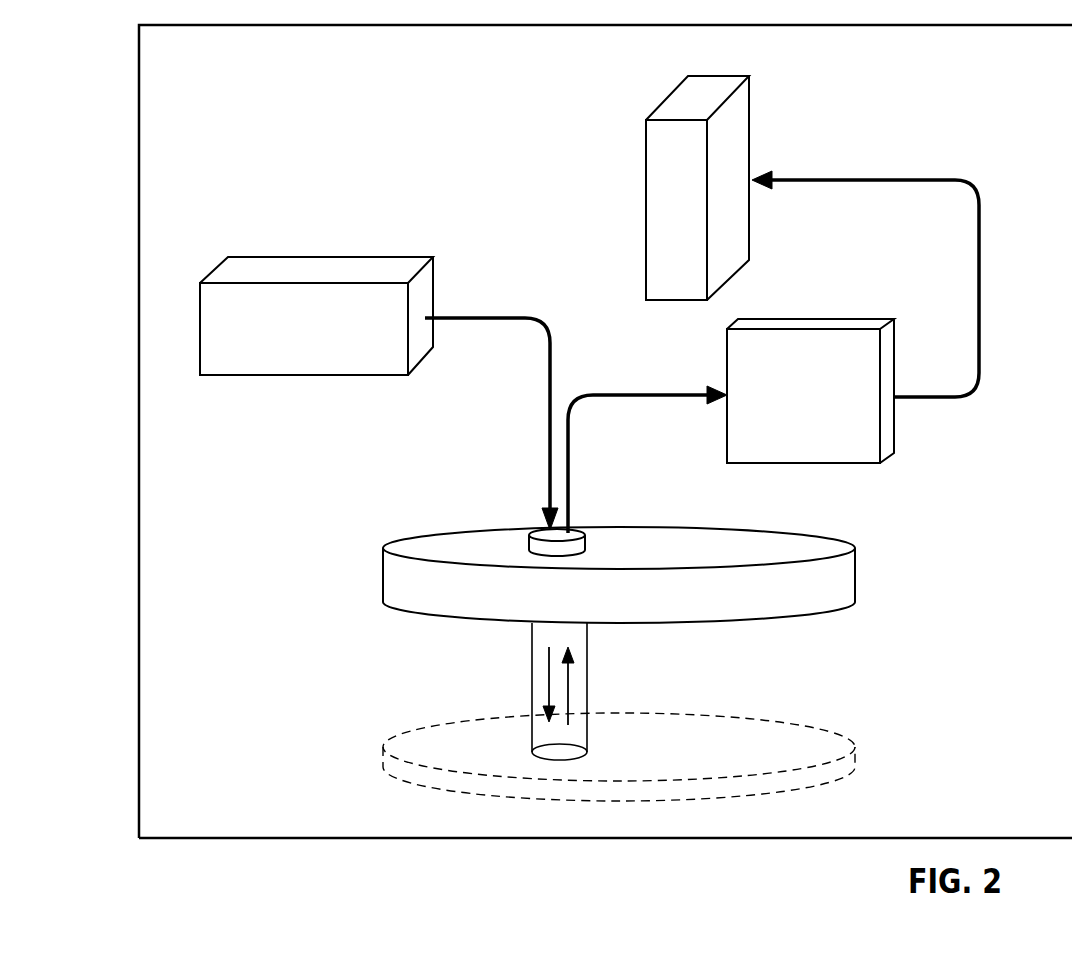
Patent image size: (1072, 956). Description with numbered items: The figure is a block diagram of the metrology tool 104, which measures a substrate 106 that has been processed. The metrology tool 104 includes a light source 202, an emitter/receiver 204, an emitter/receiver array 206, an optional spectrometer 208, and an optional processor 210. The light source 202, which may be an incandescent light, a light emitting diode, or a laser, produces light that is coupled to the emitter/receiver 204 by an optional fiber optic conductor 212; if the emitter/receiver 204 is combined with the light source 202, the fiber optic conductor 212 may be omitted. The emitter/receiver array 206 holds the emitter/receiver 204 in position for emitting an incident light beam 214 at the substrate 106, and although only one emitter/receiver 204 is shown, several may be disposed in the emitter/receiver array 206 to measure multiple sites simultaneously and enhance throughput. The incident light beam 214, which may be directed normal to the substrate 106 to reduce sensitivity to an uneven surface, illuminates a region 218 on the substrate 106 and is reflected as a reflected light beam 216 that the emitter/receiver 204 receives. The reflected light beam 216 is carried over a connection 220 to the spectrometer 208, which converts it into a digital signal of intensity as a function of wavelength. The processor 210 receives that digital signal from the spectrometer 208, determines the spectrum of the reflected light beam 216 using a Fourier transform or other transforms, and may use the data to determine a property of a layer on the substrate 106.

The metrology tool 104 is at (195, 114).
The substrate 106 is at (795, 757).
The light source 202 is at (303, 258).
The emitter/receiver 204 is at (530, 542).
The emitter/receiver array 206 is at (397, 583).
The spectrometer 208 is at (868, 463).
The processor 210 is at (646, 208).
The fiber optic conductor 212 is at (550, 393).
The incident light beam 214 is at (543, 660).
The reflected light beam 216 is at (575, 677).
The illuminated region 218 is at (535, 752).
The optical fiber to spectrometer 220 is at (568, 462).